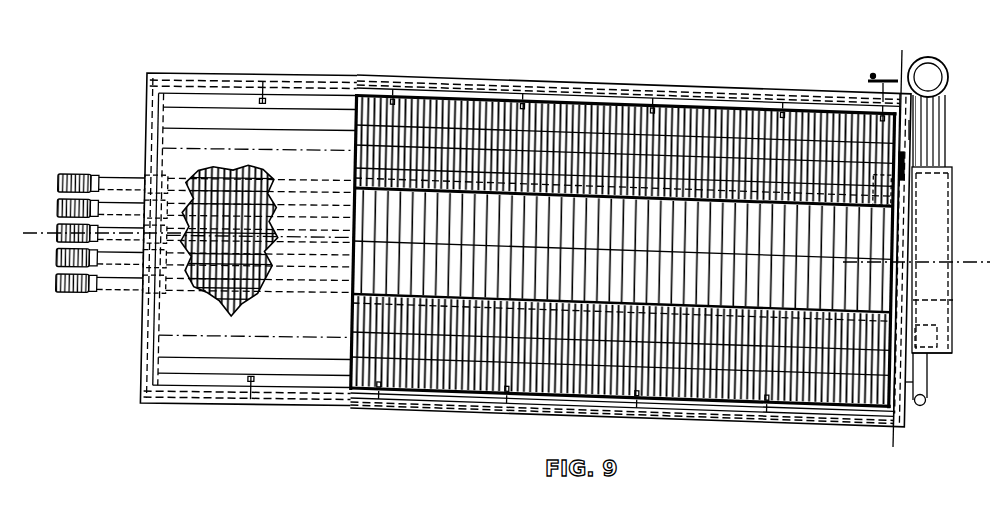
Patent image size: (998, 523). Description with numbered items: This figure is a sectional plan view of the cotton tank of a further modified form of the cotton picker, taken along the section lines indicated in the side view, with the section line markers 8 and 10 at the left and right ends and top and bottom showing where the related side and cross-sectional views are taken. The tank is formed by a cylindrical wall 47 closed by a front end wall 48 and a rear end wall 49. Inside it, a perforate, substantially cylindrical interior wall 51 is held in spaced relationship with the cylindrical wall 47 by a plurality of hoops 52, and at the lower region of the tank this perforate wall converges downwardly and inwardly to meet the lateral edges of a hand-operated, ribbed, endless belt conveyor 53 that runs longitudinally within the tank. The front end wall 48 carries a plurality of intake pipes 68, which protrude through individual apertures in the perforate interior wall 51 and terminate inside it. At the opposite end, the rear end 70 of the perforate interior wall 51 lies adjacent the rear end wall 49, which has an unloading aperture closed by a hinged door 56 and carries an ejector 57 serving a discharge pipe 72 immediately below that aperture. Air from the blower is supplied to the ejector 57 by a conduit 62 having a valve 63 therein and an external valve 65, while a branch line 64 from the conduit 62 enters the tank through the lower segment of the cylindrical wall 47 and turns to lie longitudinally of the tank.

The cylindrical wall 47 is at (490, 82).
The front end wall 48 is at (147, 346).
The rear end wall 49 is at (912, 130).
The perforate interior wall 51 is at (446, 92).
The hoops 52 is at (408, 85).
The endless belt conveyor 53 is at (357, 208).
The hinged door 56 is at (913, 203).
The ejector 57 is at (952, 280).
The conduit 62 is at (926, 400).
The valve 63 is at (937, 364).
The branch line 64 is at (952, 300).
The external valve 65 is at (908, 385).
The intake pipes 68 is at (110, 292).
The rear end of the perforate interior wall 70 is at (905, 153).
The discharge pipe 72 is at (948, 75).
The section line 8- 8 is at (28, 233).
The section line 10- 10 is at (902, 55).